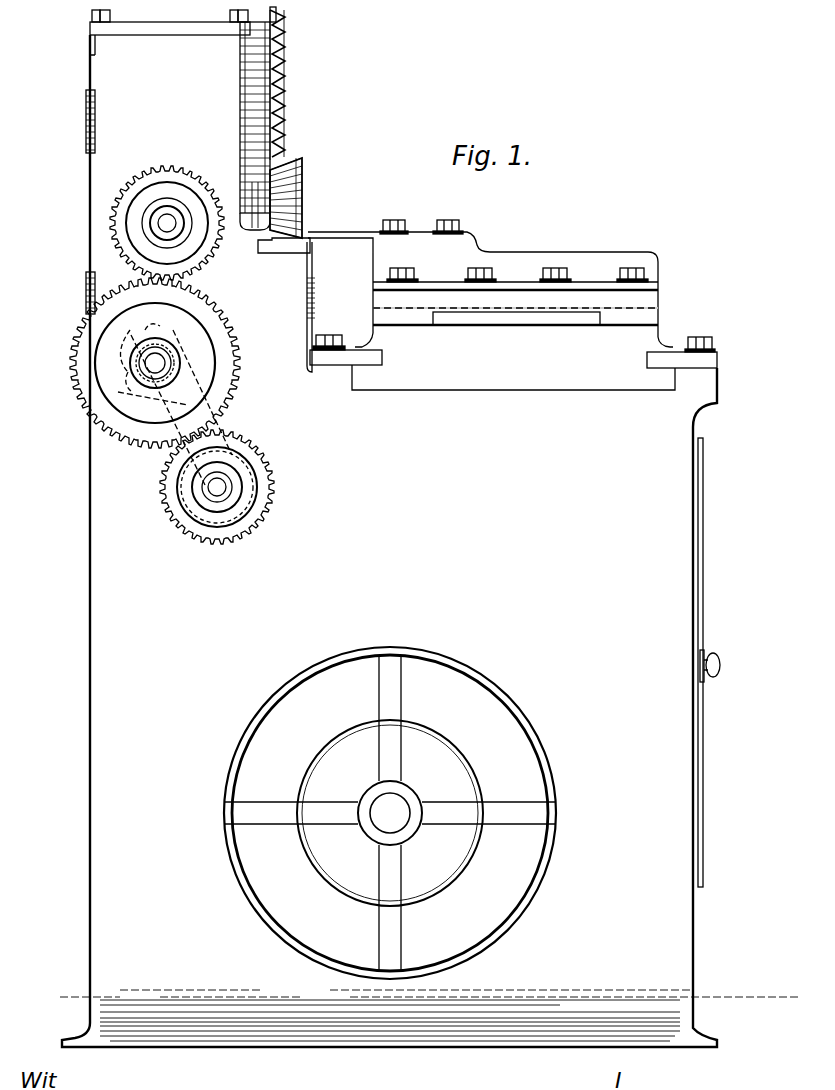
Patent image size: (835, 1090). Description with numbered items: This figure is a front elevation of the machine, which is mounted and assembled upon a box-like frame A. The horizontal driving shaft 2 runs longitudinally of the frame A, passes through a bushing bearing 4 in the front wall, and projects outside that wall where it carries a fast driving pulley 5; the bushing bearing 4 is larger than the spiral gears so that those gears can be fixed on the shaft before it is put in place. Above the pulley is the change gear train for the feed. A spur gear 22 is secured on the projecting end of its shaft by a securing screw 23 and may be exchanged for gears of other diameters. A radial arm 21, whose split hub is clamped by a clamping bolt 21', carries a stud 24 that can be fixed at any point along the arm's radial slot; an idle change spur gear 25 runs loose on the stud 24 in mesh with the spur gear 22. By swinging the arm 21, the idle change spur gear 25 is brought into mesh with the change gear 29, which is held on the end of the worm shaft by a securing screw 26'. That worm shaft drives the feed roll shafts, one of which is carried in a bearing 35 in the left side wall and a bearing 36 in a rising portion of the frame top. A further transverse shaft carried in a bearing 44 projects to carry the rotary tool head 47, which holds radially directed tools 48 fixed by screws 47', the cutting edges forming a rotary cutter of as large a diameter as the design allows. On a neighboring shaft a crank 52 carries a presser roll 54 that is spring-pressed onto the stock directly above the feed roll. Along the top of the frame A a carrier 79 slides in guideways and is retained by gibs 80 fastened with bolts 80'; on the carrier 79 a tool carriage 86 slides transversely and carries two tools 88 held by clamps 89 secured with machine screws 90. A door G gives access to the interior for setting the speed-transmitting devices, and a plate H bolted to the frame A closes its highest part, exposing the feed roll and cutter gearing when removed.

The plate H is at (140, 24).
The frame A is at (430, 564).
The door G is at (704, 578).
The driving shaft 2 is at (390, 813).
The bushing bearing 4 is at (390, 813).
The driving pulley 5 is at (465, 667).
The radial arm 21 is at (224, 415).
The clamping bolt 21' is at (126, 387).
The spur gear 22 is at (172, 483).
The securing screw 23 is at (228, 478).
The stud 24 is at (168, 358).
The idle change spur gear 25 is at (88, 385).
The securing screw 26' is at (195, 246).
The change gear 29 is at (142, 180).
The bearing 35 is at (86, 285).
The bearing 36 is at (314, 298).
The bearing 44 is at (86, 100).
The rotary tool head 47 is at (278, 117).
The screws 47' is at (297, 85).
The tools 48 is at (276, 12).
The crank 52 is at (255, 228).
The presser roll 54 is at (300, 202).
The carrier 79 is at (513, 367).
The gibs 80 is at (531, 362).
The bolts 80' is at (524, 326).
The tool carriage 86 is at (533, 262).
The tools 88 is at (338, 232).
The clamps 89 is at (432, 232).
The machine screws 90 is at (396, 218).